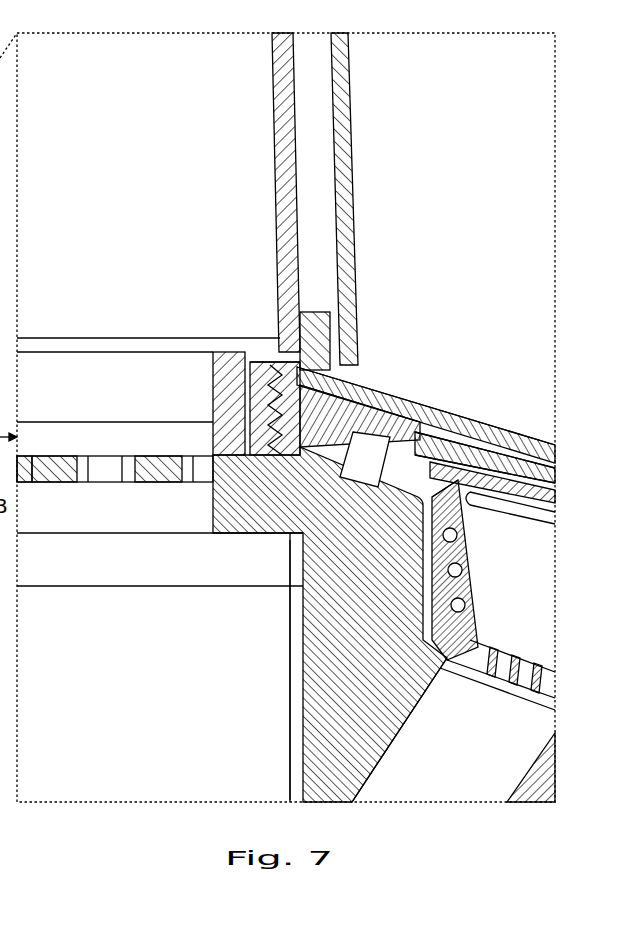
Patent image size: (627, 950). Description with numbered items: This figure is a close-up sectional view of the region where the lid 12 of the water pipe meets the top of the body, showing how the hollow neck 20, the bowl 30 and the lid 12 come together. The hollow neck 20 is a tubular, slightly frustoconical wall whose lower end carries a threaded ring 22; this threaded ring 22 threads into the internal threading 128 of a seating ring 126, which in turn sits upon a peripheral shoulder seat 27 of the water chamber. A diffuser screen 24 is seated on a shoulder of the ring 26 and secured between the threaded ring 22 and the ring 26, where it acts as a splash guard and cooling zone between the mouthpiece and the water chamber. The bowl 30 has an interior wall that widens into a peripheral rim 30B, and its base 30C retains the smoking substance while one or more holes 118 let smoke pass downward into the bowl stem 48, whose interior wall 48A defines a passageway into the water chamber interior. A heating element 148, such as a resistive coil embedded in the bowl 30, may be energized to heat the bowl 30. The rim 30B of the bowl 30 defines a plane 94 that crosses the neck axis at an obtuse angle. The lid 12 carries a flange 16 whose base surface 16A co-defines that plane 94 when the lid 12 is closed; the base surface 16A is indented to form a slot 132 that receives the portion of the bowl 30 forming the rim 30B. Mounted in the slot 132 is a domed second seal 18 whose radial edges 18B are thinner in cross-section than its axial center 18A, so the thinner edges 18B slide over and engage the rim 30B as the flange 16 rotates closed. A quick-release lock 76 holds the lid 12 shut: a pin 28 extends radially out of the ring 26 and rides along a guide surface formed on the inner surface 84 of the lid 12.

The lid 12 is at (352, 125).
The flange 16 is at (450, 400).
The base surface 16A is at (537, 562).
The second seal 18 is at (500, 502).
The axial center 18A is at (542, 520).
The radial edges 18B is at (440, 407).
The hollow neck 20 is at (272, 100).
The threaded ring 22 is at (213, 437).
The diffuser screen 24 is at (65, 485).
The ring 26 is at (260, 527).
The peripheral shoulder seat 27 is at (297, 532).
The pin 28 is at (380, 410).
The bowl 30 is at (480, 556).
The peripheral rim 30B is at (410, 440).
The base 30C is at (537, 667).
The bowl stem 48 is at (438, 790).
The interior wall 48A is at (413, 720).
The quick-release lock 76 is at (397, 423).
The inner surface 84 is at (280, 340).
The plane 94 is at (437, 433).
The holes 118 is at (518, 672).
The seating ring 126 is at (296, 372).
The internal threading 128 is at (245, 360).
The slot 132 is at (497, 440).
The heating element 148 is at (480, 607).